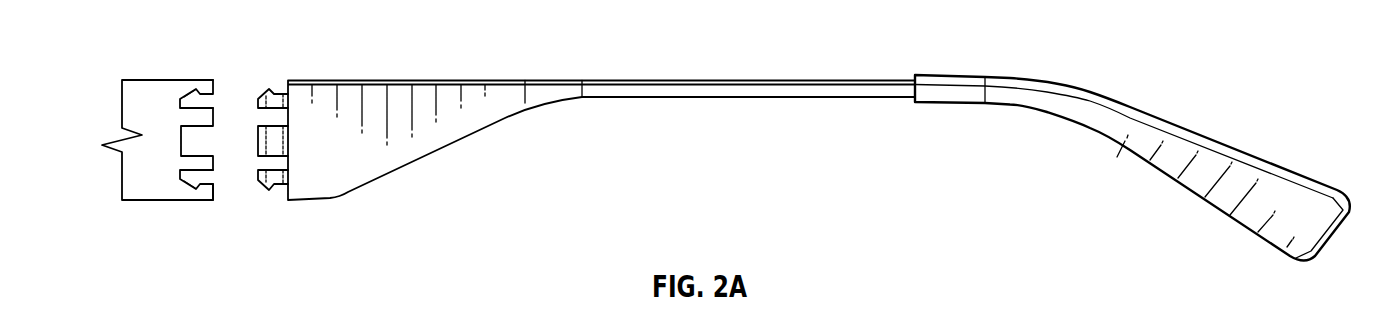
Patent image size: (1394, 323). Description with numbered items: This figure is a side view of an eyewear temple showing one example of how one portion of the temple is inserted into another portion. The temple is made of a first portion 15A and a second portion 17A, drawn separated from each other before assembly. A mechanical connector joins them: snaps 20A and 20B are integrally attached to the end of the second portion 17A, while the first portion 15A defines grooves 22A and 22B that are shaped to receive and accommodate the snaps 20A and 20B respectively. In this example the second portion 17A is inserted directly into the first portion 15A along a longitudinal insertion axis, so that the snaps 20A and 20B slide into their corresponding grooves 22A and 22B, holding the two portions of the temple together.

The first portion 15A is at (133, 80).
The second portion 17A is at (822, 80).
The snap 20A is at (276, 185).
The snap 20B is at (269, 89).
The groove 22A is at (197, 189).
The groove 22B is at (196, 88).